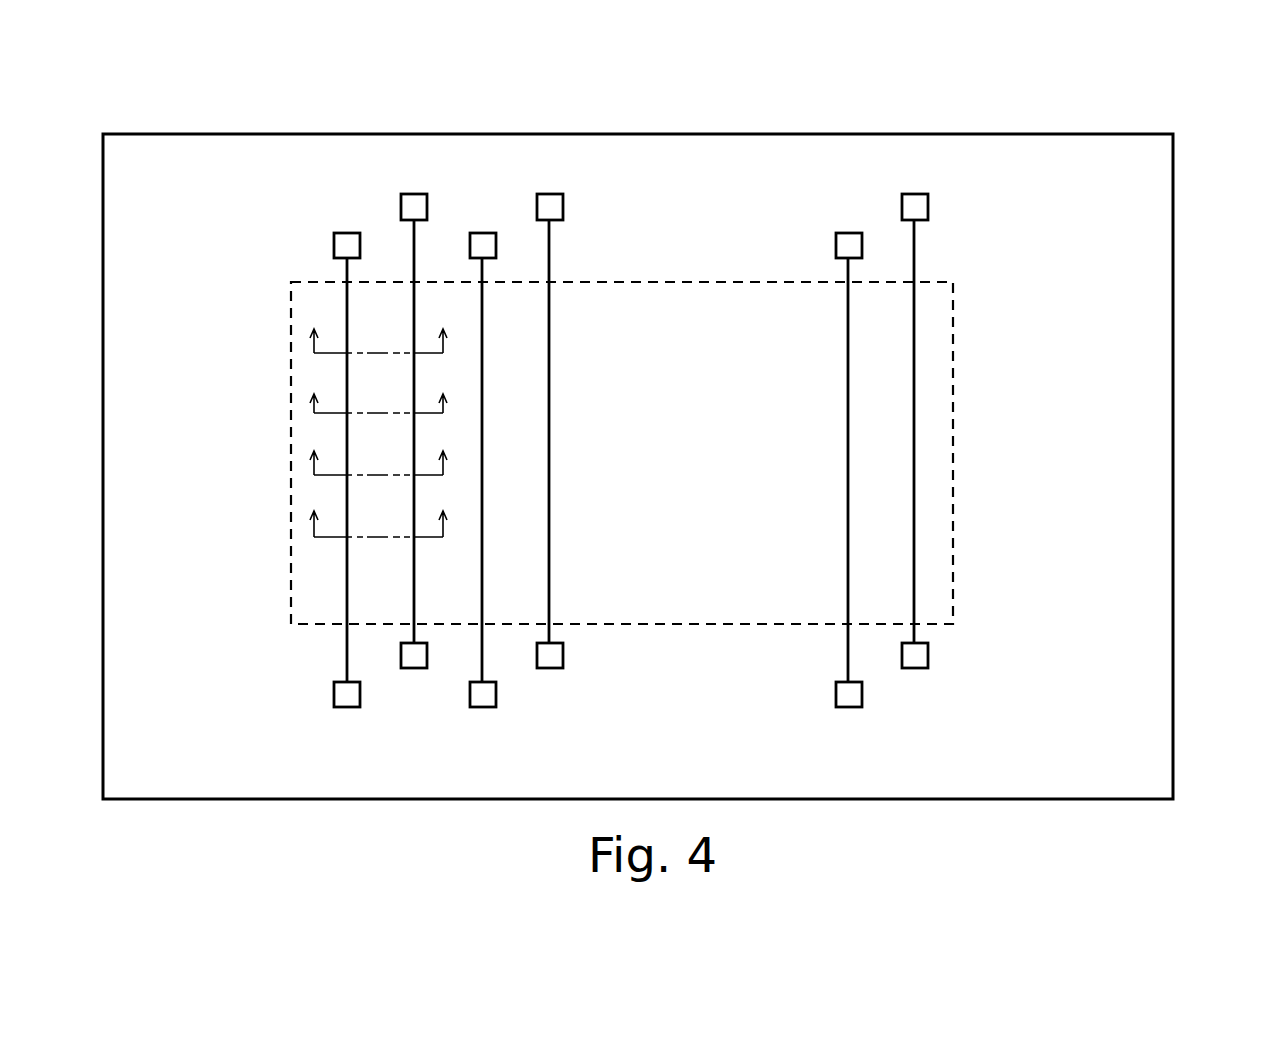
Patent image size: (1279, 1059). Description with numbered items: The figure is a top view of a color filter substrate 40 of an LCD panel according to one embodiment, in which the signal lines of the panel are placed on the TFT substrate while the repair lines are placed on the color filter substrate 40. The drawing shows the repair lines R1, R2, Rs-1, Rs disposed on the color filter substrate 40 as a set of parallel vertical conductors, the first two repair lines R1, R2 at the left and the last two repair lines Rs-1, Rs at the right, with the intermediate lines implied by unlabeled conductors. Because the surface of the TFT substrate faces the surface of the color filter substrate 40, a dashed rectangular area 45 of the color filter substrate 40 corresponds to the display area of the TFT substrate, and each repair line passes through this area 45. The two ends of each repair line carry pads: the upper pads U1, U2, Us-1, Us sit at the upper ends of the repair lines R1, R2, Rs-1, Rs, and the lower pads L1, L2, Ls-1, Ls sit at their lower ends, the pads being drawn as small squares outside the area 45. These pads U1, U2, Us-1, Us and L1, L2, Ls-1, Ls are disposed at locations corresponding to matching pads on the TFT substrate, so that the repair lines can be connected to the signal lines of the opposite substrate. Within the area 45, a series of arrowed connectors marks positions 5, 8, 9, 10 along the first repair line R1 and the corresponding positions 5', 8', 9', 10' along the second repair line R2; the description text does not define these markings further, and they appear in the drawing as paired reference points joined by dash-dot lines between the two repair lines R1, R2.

The color filter substrate 40 is at (1082, 105).
The area 45 is at (926, 272).
The sensing node on electrode R1 5 is at (358, 325).
The sensing node on electrode R2 5' is at (435, 325).
The sensing node on electrode R1 8 is at (358, 390).
The sensing node on electrode R2 8' is at (435, 390).
The sensing node on electrode R1 9 is at (358, 449).
The sensing node on electrode R2 9' is at (435, 449).
The sensing node on electrode R1 10 is at (357, 511).
The sensing node on electrode R2 10' is at (443, 511).
The pad U1 is at (345, 225).
The pad U2 is at (413, 187).
The pad Us-1 is at (857, 225).
The pad Us is at (914, 187).
The pad L1 is at (344, 714).
The pad L2 is at (412, 675).
The pad Ls-1 is at (842, 714).
The pad Ls is at (913, 675).
The repair line R1 is at (347, 655).
The repair line R2 is at (414, 636).
The repair line Rs-1 is at (848, 655).
The repair line Rs is at (914, 635).